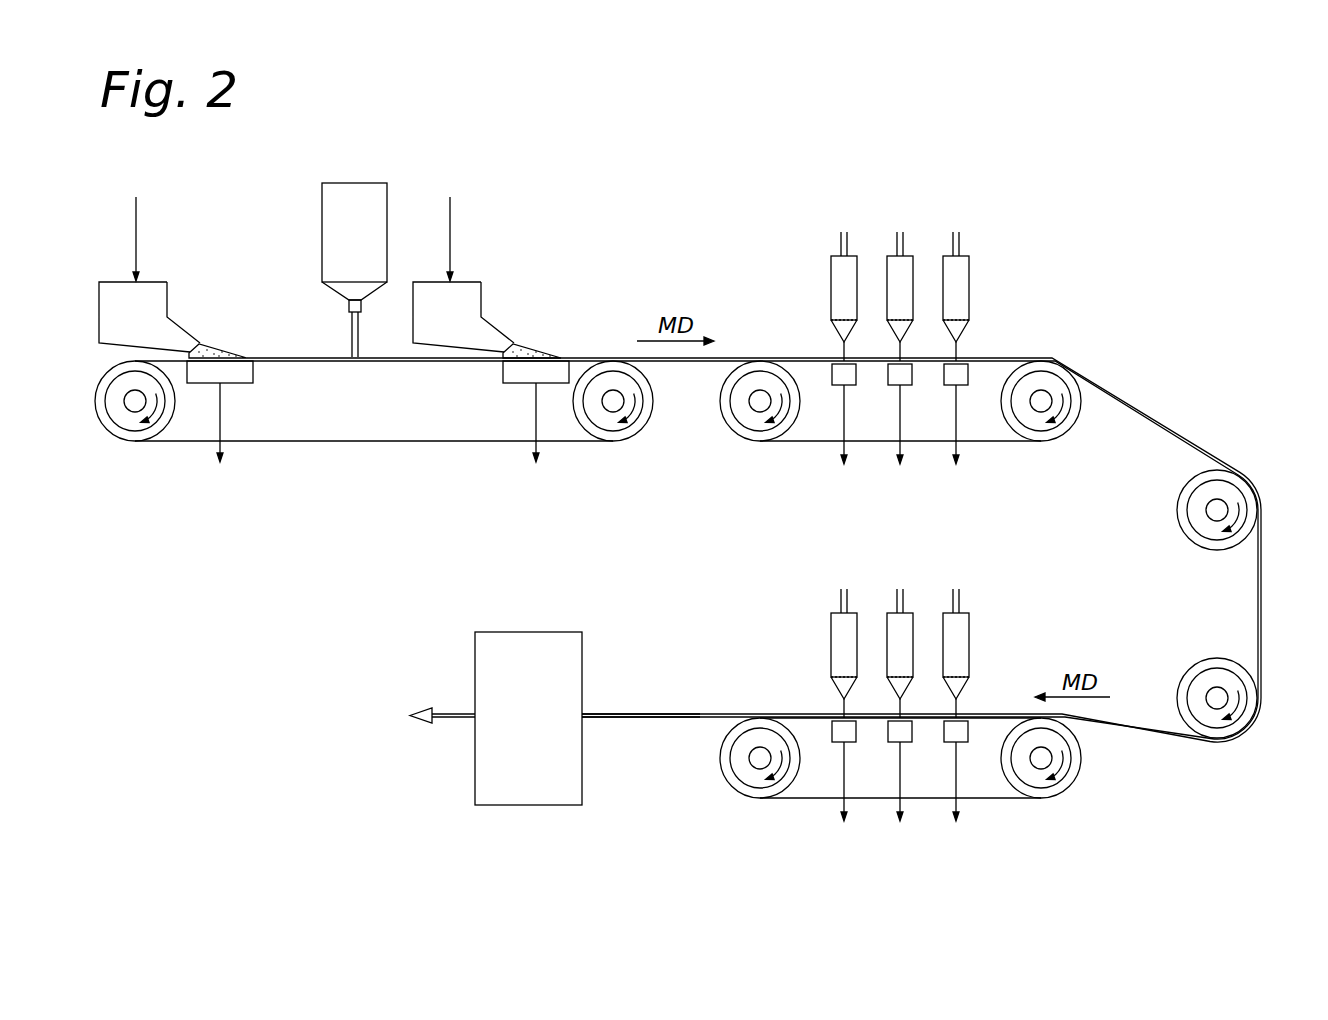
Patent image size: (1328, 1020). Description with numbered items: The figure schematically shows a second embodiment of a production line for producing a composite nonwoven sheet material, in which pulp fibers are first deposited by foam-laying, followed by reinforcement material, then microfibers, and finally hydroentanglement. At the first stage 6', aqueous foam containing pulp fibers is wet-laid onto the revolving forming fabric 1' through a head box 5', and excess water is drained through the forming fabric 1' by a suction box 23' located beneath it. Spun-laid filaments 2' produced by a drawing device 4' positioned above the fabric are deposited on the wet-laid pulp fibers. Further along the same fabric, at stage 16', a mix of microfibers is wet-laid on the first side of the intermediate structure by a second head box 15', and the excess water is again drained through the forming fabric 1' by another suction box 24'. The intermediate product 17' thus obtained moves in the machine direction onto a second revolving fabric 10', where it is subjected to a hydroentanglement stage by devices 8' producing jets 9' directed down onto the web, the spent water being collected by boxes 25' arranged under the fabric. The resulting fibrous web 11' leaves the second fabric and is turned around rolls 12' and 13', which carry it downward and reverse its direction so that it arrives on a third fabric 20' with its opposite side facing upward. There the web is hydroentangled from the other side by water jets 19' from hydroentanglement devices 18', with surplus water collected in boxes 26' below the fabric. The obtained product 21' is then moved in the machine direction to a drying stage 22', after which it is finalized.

The forming fabric 1' is at (374, 427).
The spun-laid filaments 2' is at (330, 328).
The drawing device 4' is at (339, 241).
The head box 5' is at (156, 274).
The foam-laying stage 6' is at (223, 334).
The hydroentanglement devices 8' is at (821, 287).
The jets 9' is at (823, 341).
The second revolving fabric 10' is at (880, 430).
The fibrous web 11' is at (1038, 369).
The roll 12' is at (1244, 508).
The roll 13' is at (1244, 698).
The head box 15' is at (477, 274).
The microfiber laying stage 16' is at (547, 334).
The intermediate product 17' is at (754, 526).
The hydroentanglement devices 18' is at (817, 644).
The water jets 19' is at (819, 699).
The fabric 20' is at (900, 787).
The obtained product 21' is at (641, 692).
The drying stage 22' is at (496, 691).
The suction box 23' is at (232, 426).
The suction box 24' is at (551, 426).
The boxes 25' is at (915, 432).
The boxes 26' is at (915, 788).